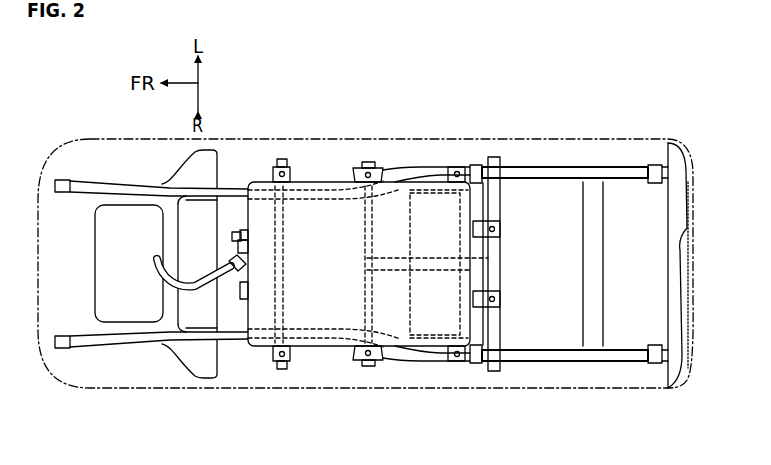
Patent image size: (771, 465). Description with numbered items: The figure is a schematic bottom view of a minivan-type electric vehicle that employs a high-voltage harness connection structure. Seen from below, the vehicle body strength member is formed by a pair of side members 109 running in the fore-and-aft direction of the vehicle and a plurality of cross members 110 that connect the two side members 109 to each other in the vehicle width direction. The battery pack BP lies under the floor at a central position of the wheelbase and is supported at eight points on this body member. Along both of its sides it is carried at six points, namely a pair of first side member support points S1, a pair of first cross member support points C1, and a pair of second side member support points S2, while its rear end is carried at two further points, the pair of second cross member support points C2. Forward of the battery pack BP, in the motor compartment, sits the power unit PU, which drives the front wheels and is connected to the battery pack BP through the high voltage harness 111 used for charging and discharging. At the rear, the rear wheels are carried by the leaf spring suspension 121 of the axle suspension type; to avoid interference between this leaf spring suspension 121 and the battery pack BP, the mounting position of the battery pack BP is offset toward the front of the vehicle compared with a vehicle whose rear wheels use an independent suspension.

The side member 109 is at (400, 167).
The cross member 110 is at (177, 232).
The high voltage harness 111 is at (185, 294).
The leaf spring suspension 121 is at (528, 166).
The first side member support point S1 is at (273, 171).
The second side member support point S2 is at (460, 168).
The first cross member support point C1 is at (356, 167).
The second cross member support point C2 is at (496, 229).
The battery pack BP is at (311, 180).
The power unit PU is at (93, 258).